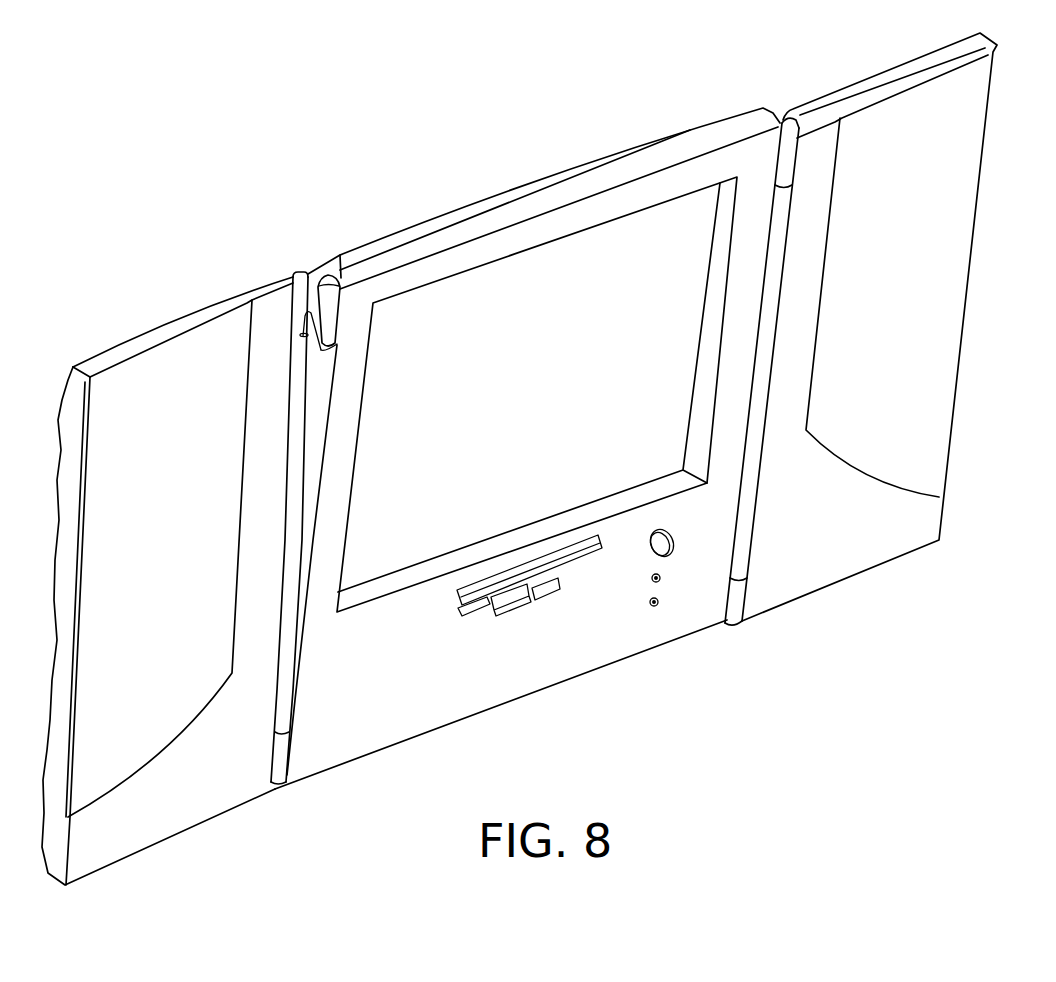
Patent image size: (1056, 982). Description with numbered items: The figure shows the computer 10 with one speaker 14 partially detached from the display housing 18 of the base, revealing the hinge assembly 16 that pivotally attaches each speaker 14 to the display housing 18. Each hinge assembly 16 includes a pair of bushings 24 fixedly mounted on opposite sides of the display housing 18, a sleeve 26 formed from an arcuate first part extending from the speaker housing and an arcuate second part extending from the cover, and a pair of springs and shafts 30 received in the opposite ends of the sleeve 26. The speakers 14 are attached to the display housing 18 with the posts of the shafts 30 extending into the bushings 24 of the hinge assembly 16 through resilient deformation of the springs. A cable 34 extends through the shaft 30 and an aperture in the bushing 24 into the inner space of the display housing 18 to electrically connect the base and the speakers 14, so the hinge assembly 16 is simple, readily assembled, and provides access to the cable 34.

The computer 10 is at (211, 143).
The speaker 14 is at (158, 812).
The hinge assembly 16 is at (300, 474).
The display housing 18 is at (727, 373).
The bushing 24 is at (336, 300).
The sleeve 26 is at (303, 413).
The shaft 30 is at (322, 352).
The cable 34 is at (301, 314).